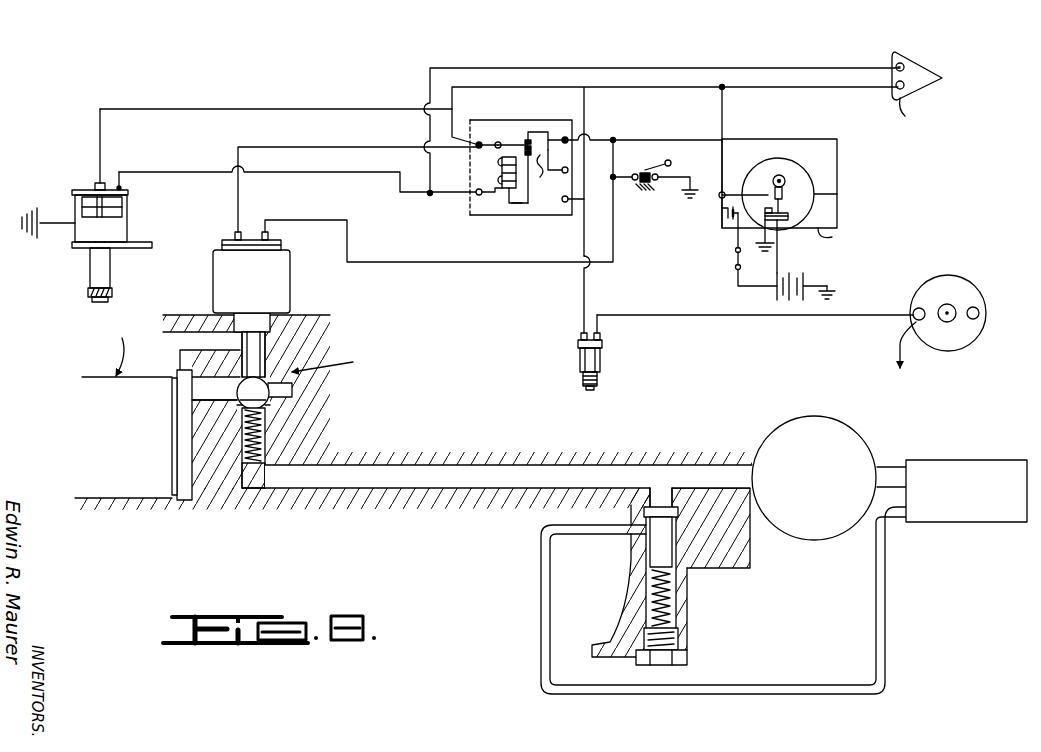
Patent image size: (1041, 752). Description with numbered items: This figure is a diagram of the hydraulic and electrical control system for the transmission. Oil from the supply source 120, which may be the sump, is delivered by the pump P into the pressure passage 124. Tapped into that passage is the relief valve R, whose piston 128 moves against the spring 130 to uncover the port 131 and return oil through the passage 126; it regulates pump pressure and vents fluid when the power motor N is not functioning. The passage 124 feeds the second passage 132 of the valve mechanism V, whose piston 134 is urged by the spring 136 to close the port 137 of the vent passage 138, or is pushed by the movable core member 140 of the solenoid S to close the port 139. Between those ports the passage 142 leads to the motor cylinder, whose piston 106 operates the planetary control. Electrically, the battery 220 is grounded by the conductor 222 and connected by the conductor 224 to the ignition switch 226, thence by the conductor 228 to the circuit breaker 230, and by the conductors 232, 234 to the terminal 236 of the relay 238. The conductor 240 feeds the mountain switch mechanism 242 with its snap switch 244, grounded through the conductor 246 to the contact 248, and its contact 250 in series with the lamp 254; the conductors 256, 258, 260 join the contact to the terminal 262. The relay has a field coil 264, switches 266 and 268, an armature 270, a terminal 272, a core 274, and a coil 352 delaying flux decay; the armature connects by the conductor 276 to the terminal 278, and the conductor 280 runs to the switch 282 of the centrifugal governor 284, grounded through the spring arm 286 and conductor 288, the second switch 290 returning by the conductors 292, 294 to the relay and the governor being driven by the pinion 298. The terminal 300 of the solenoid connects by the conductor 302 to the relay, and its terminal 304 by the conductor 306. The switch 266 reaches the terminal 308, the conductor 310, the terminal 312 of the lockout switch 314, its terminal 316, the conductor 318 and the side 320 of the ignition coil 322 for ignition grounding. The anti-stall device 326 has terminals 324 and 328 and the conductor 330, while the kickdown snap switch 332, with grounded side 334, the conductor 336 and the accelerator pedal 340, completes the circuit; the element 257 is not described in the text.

The piston 106 is at (170, 497).
The supply source 120 is at (985, 502).
The pressure line or passage 124 is at (708, 470).
The passage 126 is at (543, 538).
The piston 128 is at (660, 550).
The spring 130 is at (672, 612).
The port 131 is at (640, 513).
The second passage 132 is at (310, 456).
The piston 134 is at (282, 393).
The spring 136 is at (266, 442).
The port 137 is at (305, 358).
The fluid passage 138 is at (318, 336).
The port 139 is at (290, 398).
The movable core member 140 is at (300, 322).
The passage 142 is at (295, 390).
The vehicle battery 220 is at (800, 278).
The conductor 222 is at (836, 289).
The conductor 224 is at (752, 288).
The ignition switch 226 is at (736, 270).
The conductor 228 is at (736, 234).
The circuit breaker 230 is at (726, 213).
The conductor 232 is at (724, 110).
The conductor 234 is at (586, 88).
The terminal 236 is at (480, 142).
The relay 238 is at (515, 205).
The conductor 240 is at (745, 188).
The mountain switch mechanism 242 is at (816, 186).
The snap switch 244 is at (767, 247).
The conductor 246 is at (736, 253).
The contact 248 is at (767, 208).
The contact 250 is at (778, 228).
The lamp 254 is at (782, 176).
The conductor 256 is at (830, 232).
The housing wall 257 is at (818, 206).
The conductor 258 is at (838, 160).
The conductor 260 is at (655, 125).
The terminal 262 is at (570, 138).
The field coil 264 is at (500, 181).
The switch 266 is at (522, 136).
The switch 268 is at (528, 158).
The armature 270 is at (516, 137).
The terminal 272 is at (479, 196).
The core 274 is at (508, 190).
The conductor 276 is at (546, 172).
The terminal 278 is at (568, 173).
The conductor 280 is at (379, 109).
The switch 282 is at (124, 200).
The centrifugal governor 284 is at (92, 232).
The spring arm 286 is at (82, 190).
The conductor 288 is at (44, 220).
The second switch 290 is at (124, 212).
The conductor 292 is at (290, 175).
The conductor 294 is at (430, 196).
The governor pinion 298 is at (113, 294).
The terminal 300 is at (236, 236).
The conductor 302 is at (337, 147).
The terminal 304 is at (268, 236).
The conductor 306 is at (443, 264).
The terminal 308 is at (565, 203).
The conductor 310 is at (583, 303).
The terminal 312 is at (578, 343).
The lockout switch 314 is at (601, 362).
The terminal 316 is at (600, 337).
The conductor 318 is at (760, 316).
The side 320 is at (912, 318).
The ignition coil 322 is at (952, 287).
The terminal 324 is at (920, 112).
The magnetic anti-stall device 326 is at (912, 62).
The terminal 328 is at (896, 65).
The conductor 330 is at (660, 68).
The snap switch 332 is at (643, 191).
The side 334 is at (690, 176).
The conductor 336 is at (641, 171).
The accelerator pedal 340 is at (670, 160).
The coil 352 is at (498, 161).
The power motor N is at (119, 346).
The pump P is at (829, 478).
The relief valve R is at (682, 595).
The solenoid S is at (264, 292).
The valve mechanism V is at (331, 359).